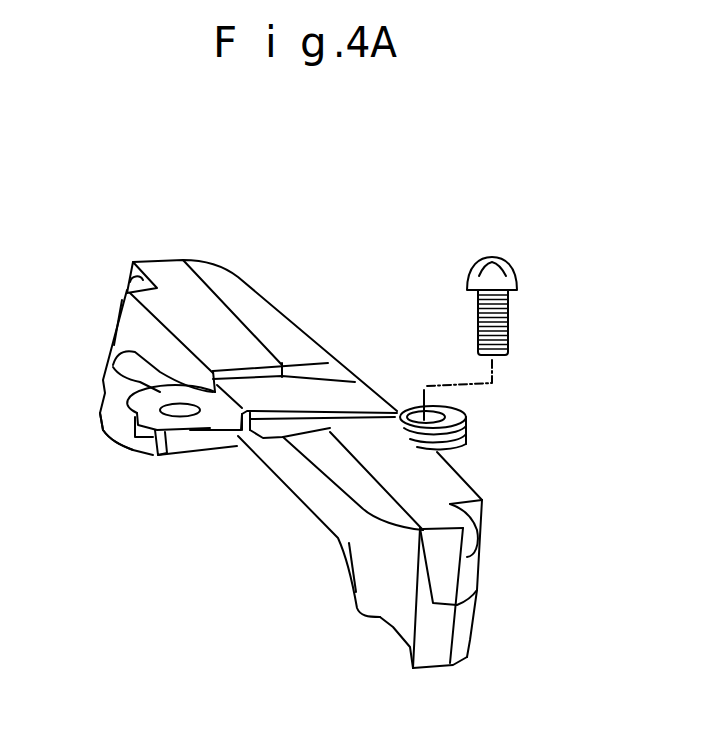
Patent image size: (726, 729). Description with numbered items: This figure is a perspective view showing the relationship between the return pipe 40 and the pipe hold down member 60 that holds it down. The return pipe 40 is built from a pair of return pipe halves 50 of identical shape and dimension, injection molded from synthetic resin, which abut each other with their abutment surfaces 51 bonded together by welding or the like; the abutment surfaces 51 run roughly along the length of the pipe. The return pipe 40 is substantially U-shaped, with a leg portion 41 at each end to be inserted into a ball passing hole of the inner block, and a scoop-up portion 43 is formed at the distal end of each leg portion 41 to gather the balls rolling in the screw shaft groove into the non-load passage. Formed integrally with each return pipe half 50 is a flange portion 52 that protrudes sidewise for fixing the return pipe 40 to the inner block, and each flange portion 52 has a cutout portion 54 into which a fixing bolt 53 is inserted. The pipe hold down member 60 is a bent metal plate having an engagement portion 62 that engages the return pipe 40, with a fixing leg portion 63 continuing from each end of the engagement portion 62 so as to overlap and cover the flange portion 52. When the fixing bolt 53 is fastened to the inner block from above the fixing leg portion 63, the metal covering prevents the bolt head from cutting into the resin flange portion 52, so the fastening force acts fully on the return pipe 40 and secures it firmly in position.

The return pipe 40 is at (496, 595).
The leg portion 41 is at (112, 340).
The scoop-up portion 43 is at (390, 624).
The return pipe half 50 is at (170, 278).
The abutment surface 51 is at (207, 279).
The flange portion 52 is at (213, 445).
The fixing bolt 53 is at (512, 317).
The cutout portion 54 is at (125, 449).
The pipe hold down member 60 is at (358, 383).
The engagement portion 62 is at (272, 438).
The fixing leg portion 63 is at (113, 389).